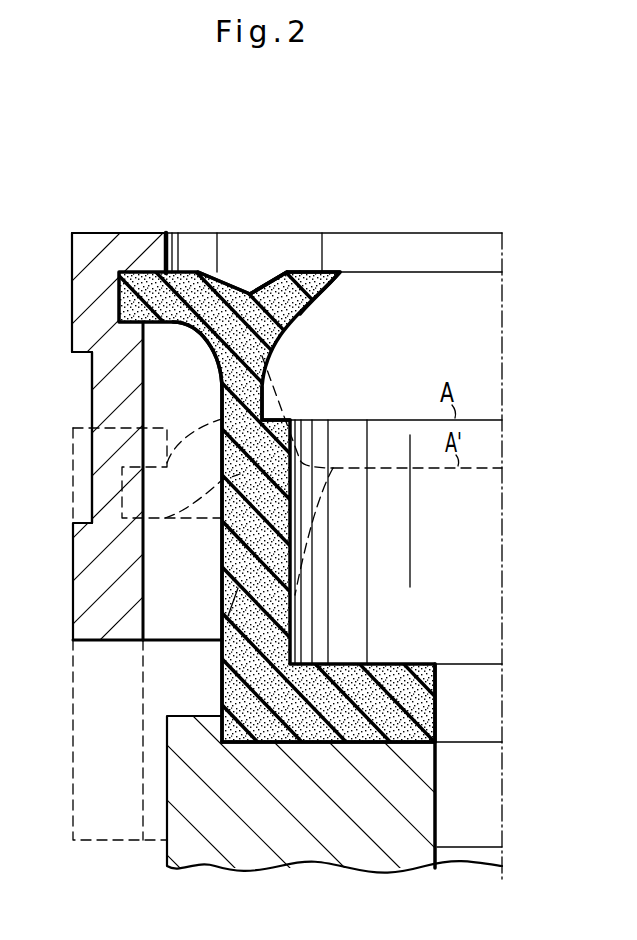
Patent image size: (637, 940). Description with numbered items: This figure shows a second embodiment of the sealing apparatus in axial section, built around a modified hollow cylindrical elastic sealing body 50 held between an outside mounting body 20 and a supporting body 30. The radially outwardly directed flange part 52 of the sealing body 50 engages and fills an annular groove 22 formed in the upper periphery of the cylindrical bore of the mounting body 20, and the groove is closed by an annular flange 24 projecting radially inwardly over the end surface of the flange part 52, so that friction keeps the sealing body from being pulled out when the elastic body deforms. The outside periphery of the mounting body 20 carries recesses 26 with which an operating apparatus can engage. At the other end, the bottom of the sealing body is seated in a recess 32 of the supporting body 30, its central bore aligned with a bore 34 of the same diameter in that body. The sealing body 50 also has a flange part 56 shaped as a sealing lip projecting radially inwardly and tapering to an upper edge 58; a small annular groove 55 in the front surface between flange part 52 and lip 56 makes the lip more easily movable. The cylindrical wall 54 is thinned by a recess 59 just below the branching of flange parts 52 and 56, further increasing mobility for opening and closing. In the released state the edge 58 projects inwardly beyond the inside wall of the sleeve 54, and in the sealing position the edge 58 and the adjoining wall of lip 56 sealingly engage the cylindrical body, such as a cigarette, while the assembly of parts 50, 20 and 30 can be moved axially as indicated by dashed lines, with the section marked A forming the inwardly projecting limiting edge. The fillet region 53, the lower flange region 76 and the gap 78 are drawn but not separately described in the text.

The mounting body 20 is at (73, 549).
The annular groove 22 is at (118, 307).
The annular flange 24 is at (122, 252).
The recesses 26 is at (92, 380).
The supporting body 30 is at (298, 852).
The recess 32 is at (421, 739).
The bore 34 is at (502, 847).
The sealing body 50 is at (322, 340).
The flange part 52 is at (186, 273).
The seal fillet 53 is at (213, 342).
The cylindrical wall 54 is at (233, 553).
The annular groove 55 is at (252, 290).
The sealing lip 56 is at (293, 272).
The upper edge 58 is at (338, 272).
The recess 59 is at (263, 405).
The seal lower flange 76 is at (402, 687).
The gap 78 is at (475, 685).